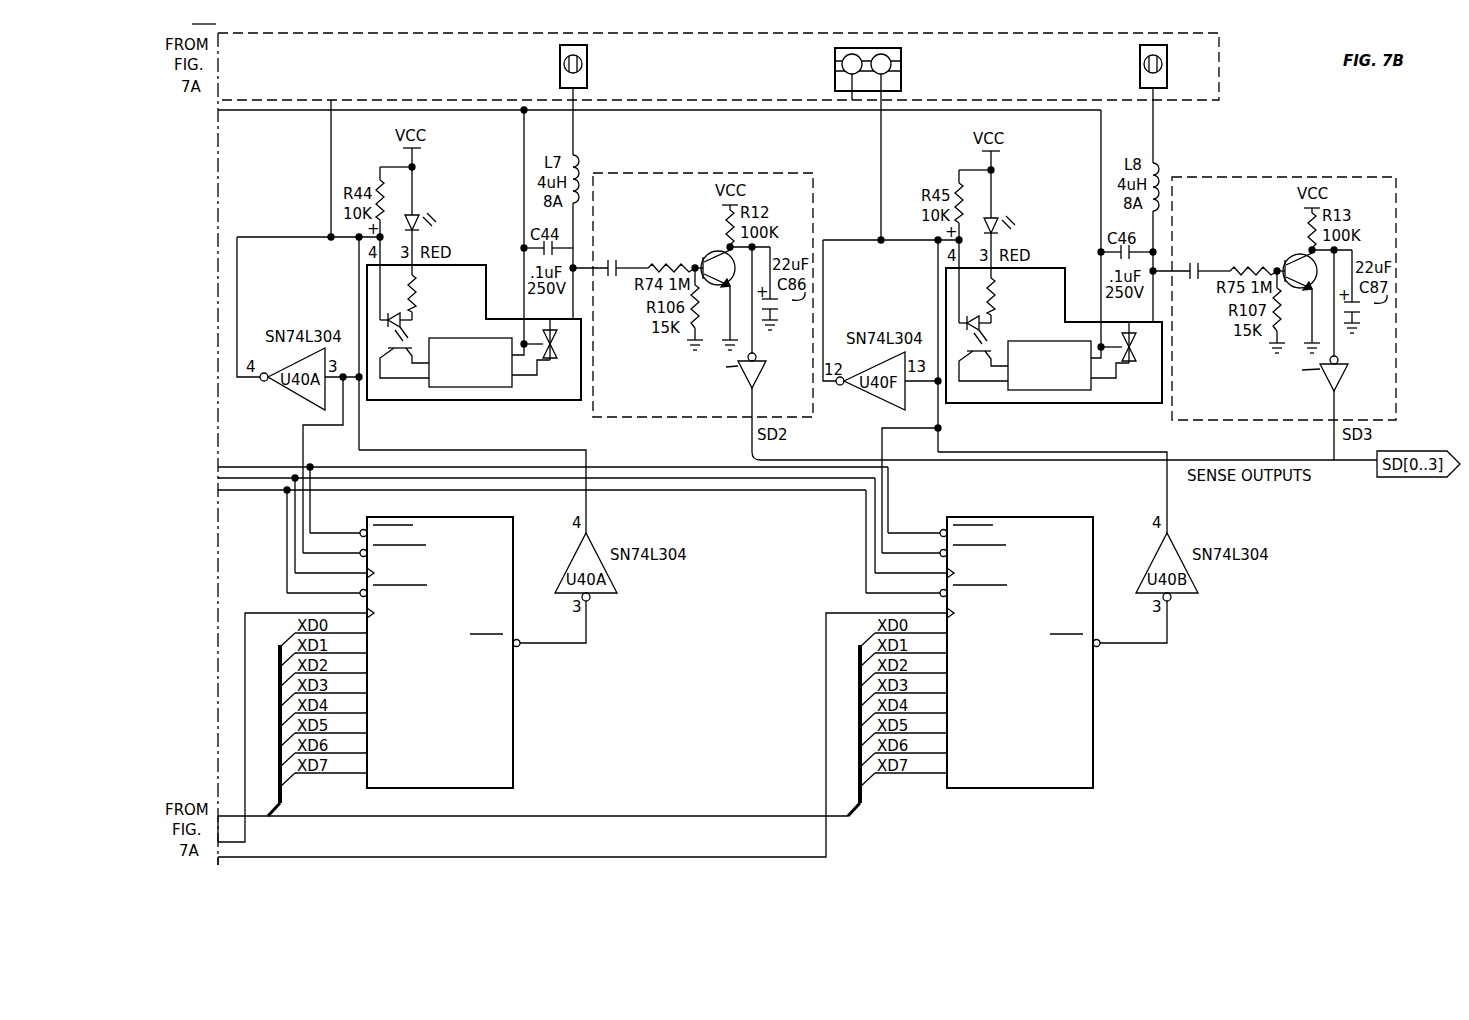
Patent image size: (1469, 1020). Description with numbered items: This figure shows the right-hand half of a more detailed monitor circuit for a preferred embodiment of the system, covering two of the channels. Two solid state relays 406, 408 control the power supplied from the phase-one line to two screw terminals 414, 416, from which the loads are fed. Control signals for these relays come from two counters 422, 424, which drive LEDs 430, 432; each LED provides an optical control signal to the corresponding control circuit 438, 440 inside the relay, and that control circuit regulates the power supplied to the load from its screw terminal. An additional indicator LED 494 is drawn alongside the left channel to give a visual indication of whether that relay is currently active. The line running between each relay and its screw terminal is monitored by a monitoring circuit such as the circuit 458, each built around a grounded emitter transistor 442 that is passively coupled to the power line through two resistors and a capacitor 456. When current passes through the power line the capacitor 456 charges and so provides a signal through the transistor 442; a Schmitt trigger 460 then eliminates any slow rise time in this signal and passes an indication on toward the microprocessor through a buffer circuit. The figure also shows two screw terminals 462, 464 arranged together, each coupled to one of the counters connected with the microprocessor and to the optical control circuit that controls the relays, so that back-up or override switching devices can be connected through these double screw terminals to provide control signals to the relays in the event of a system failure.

The solid state relay 406 is at (510, 401).
The solid state relay 408 is at (1089, 404).
The screw terminal 414 is at (589, 82).
The screw terminal 416 is at (1169, 82).
The counter 422 is at (515, 725).
The counter 424 is at (1095, 725).
The LED 430 is at (410, 301).
The LED 432 is at (989, 304).
The control circuit 438 is at (465, 338).
The control circuit 440 is at (1044, 341).
The grounded emitter transistor 442 is at (728, 247).
The monitoring circuit capacitor 456 is at (620, 258).
The monitoring circuit 458 is at (1225, 420).
The Schmitt trigger 460 is at (762, 373).
The screw terminal 462 is at (833, 81).
The screw terminal 464 is at (902, 52).
The LED11 494 is at (434, 220).